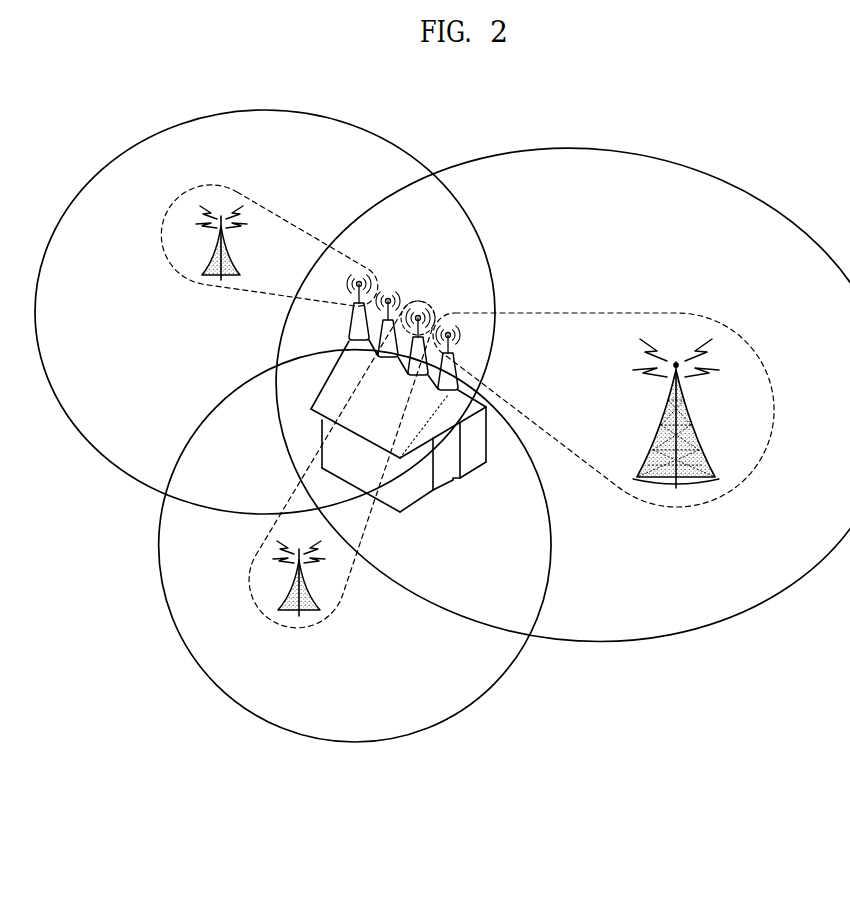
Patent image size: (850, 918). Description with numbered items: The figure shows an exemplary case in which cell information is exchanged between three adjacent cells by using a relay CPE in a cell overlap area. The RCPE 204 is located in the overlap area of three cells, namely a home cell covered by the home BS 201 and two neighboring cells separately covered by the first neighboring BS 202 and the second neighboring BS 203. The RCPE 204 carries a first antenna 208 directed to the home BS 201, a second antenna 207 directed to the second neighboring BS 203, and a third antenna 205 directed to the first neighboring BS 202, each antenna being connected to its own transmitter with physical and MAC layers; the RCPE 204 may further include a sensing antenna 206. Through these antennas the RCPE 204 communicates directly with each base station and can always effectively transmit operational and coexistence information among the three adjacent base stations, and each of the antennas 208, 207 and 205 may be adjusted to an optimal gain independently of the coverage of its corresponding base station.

The home BS 201 is at (682, 439).
The first neighboring BS 202 is at (199, 279).
The second neighboring BS 203 is at (302, 594).
The RCPE 204 is at (417, 440).
The third antenna 205 is at (370, 266).
The sensing antenna 206 is at (392, 289).
The second antenna 207 is at (432, 300).
The first antenna 208 is at (470, 322).